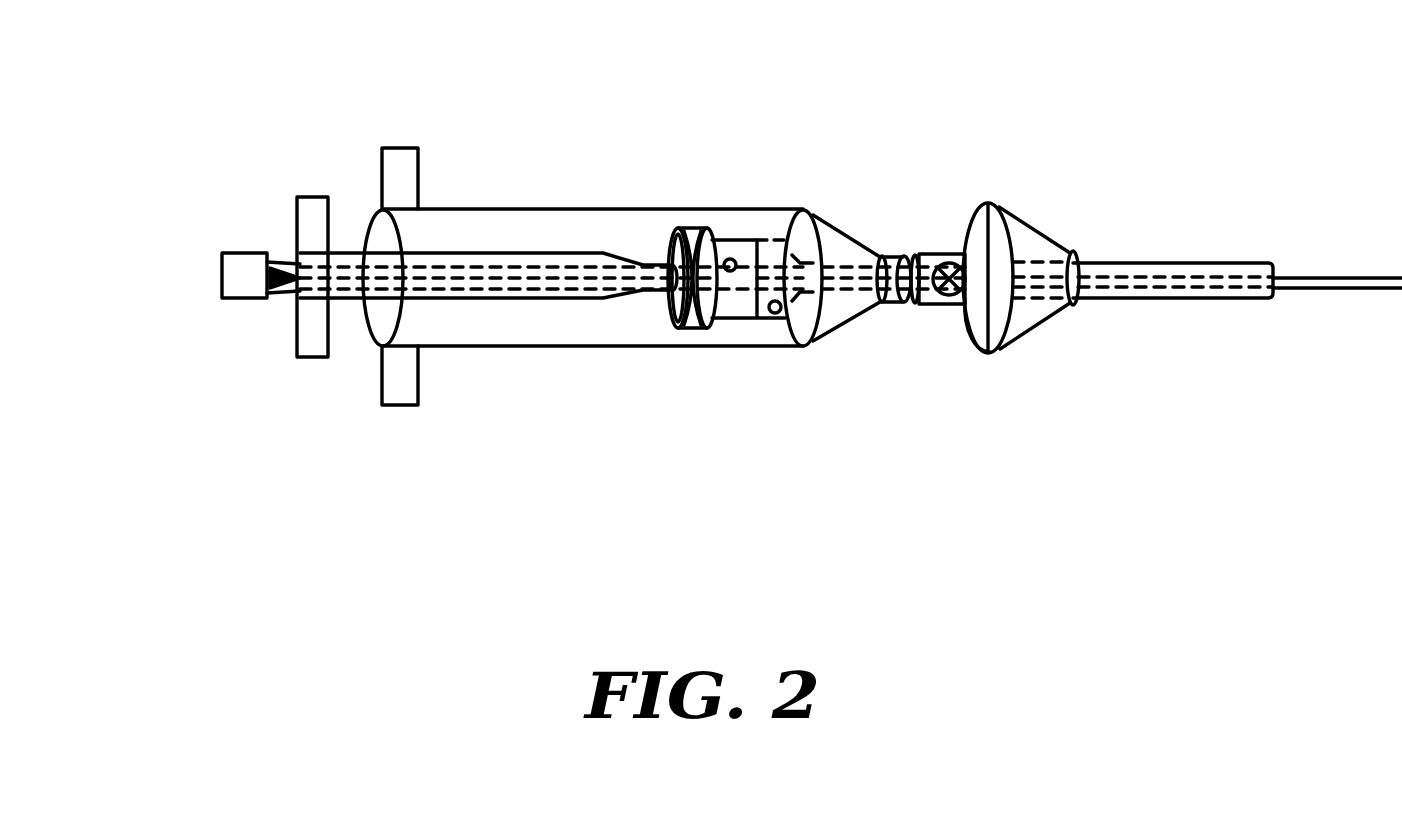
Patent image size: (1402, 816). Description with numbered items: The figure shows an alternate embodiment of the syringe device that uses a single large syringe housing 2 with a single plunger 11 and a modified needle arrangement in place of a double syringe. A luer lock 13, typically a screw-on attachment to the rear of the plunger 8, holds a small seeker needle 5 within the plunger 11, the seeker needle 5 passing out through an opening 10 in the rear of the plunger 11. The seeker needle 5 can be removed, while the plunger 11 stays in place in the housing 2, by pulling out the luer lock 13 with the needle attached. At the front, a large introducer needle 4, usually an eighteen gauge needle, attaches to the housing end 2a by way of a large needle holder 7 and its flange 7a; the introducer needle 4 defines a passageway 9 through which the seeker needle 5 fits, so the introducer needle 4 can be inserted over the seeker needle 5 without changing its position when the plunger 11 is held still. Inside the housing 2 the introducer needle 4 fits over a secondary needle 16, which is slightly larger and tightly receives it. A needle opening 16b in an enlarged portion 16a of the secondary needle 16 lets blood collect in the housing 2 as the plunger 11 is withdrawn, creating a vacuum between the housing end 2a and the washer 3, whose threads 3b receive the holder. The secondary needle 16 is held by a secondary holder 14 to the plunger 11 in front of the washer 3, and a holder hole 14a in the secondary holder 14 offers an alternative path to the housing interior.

The large syringe housing 2 is at (635, 210).
The housing end 2a is at (895, 290).
The washer 3 is at (702, 333).
The threads 3b is at (677, 330).
The introducer needle 4 is at (1115, 298).
The seeker needle 5 is at (360, 318).
The large needle holder 7 is at (985, 208).
The hub flange 7a is at (968, 345).
The small syringe plunger 8 is at (356, 300).
The passageway 9 is at (1225, 267).
The opening 10 is at (503, 270).
The plunger 11 is at (480, 252).
The luer lock 13 is at (247, 275).
The secondary holder 14 is at (737, 320).
The holder hole 14a is at (750, 240).
The secondary needle 16 is at (954, 404).
The enlarged portion 16a is at (797, 243).
The needle opening 16b is at (778, 312).